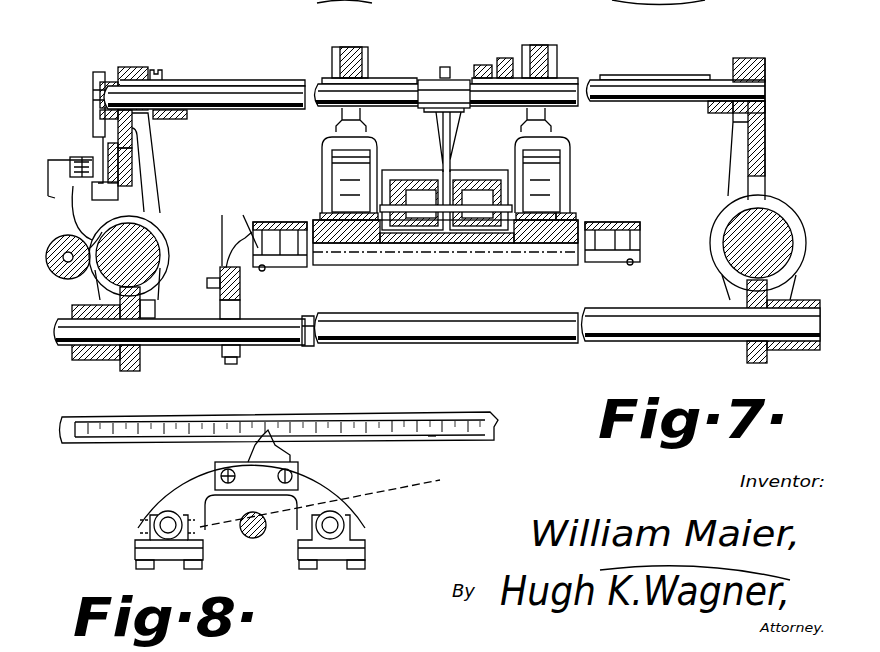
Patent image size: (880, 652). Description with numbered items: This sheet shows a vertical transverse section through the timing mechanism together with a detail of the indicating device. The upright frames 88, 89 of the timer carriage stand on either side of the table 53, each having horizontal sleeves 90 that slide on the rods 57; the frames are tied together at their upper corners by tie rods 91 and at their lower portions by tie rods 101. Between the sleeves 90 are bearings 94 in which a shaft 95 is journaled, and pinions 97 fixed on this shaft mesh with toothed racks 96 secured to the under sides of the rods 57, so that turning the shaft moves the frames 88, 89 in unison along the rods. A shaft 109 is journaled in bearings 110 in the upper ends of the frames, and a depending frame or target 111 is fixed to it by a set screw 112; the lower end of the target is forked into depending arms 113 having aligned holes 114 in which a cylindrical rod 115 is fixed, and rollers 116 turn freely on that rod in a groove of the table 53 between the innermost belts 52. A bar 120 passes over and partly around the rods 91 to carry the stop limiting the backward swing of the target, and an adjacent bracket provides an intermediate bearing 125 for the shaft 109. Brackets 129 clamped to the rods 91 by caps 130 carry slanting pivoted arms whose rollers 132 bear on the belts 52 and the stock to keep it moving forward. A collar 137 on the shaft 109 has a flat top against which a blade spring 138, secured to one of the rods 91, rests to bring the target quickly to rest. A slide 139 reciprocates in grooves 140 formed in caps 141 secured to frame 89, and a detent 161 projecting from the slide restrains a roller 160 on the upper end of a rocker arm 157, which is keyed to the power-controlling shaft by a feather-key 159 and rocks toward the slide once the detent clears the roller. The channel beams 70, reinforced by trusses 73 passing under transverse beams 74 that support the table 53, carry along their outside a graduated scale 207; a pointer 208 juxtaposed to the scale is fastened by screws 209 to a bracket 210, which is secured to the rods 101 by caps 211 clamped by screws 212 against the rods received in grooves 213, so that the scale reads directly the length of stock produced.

In FIG. 7, the belts 52 is at (365, 214).
In FIG. 7, the table 53 is at (562, 220).
In FIG. 7, the rods 57 is at (146, 254).
In FIG. 7, the channel beams 70 is at (266, 226).
In FIG. 8, the channel beams 70 is at (496, 427).
In FIG. 7, the trusses 73 is at (262, 270).
In FIG. 7, the transverse beams 74 is at (338, 263).
In FIG. 7, the upright frame 88 is at (767, 138).
In FIG. 7, the upright frame 89 is at (146, 166).
In FIG. 7, the horizontal sleeves 90 is at (168, 272).
In FIG. 7, the tie rods 91 is at (273, 80).
In FIG. 7, the bearings 94 is at (95, 352).
In FIG. 7, the shaft 95 is at (416, 344).
In FIG. 8, the shaft 95 is at (256, 539).
In FIG. 7, the toothed racks 96 is at (141, 296).
In FIG. 7, the pinions 97 is at (128, 368).
In FIG. 7, the tie rods 101 is at (314, 346).
In FIG. 8, the tie rods 101 is at (148, 524).
In FIG. 7, the shaft 109 is at (401, 86).
In FIG. 7, the bearings 110 is at (133, 66).
In FIG. 7, the depending frame or target 111 is at (464, 114).
In FIG. 7, the set screw 112 is at (446, 66).
In FIG. 7, the depending arms 113 is at (448, 232).
In FIG. 7, the aligned holes 114 is at (396, 208).
In FIG. 7, the cylindrical rod 115 is at (406, 205).
In FIG. 7, the rollers 116 is at (470, 232).
In FIG. 7, the bar 120 is at (488, 64).
In FIG. 7, the intermediate bearing 125 is at (506, 57).
In FIG. 7, the brackets 129 is at (346, 60).
In FIG. 7, the caps 130 is at (340, 134).
In FIG. 7, the rollers 132 is at (345, 172).
In FIG. 7, the collar 137 is at (165, 120).
In FIG. 7, the blade spring 138 is at (163, 72).
In FIG. 7, the slide 139 is at (120, 172).
In FIG. 7, the grooves 140 is at (125, 152).
In FIG. 7, the caps 141 is at (118, 192).
In FIG. 7, the rocker arm 157 is at (50, 192).
In FIG. 7, the feather-key 159 is at (94, 190).
In FIG. 7, the roller 160 is at (70, 166).
In FIG. 7, the detent 161 is at (96, 160).
In FIG. 7, the graduated scale 207 is at (243, 215).
In FIG. 8, the graduated scale 207 is at (431, 440).
In FIG. 7, the pointer 208 is at (222, 215).
In FIG. 8, the pointer 208 is at (298, 455).
In FIG. 8, the screws 209 is at (256, 476).
In FIG. 7, the bracket 210 is at (241, 289).
In FIG. 8, the bracket 210 is at (289, 497).
In FIG. 8, the caps 211 is at (135, 548).
In FIG. 8, the screws 212 is at (136, 564).
In FIG. 8, the grooves 213 is at (180, 545).